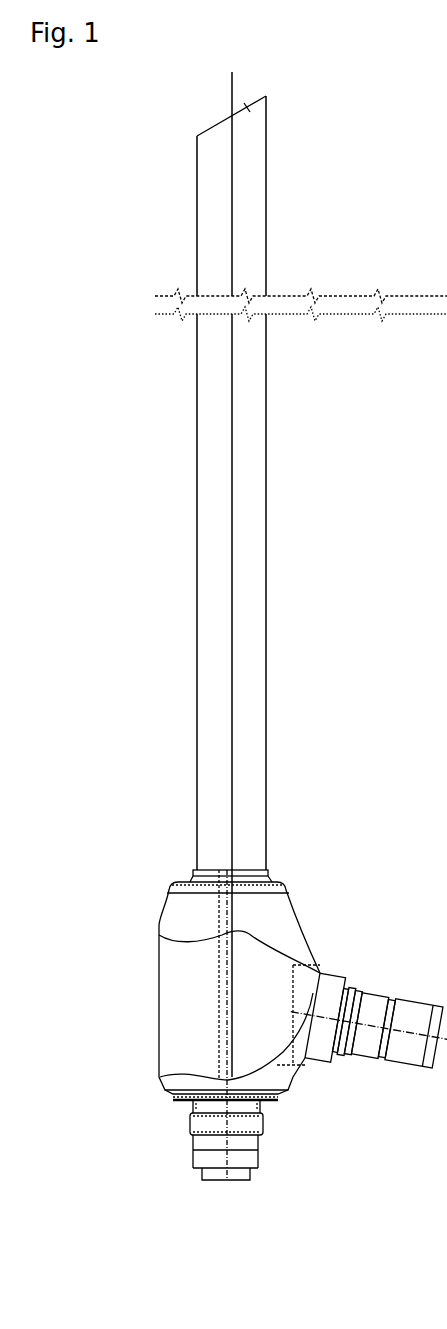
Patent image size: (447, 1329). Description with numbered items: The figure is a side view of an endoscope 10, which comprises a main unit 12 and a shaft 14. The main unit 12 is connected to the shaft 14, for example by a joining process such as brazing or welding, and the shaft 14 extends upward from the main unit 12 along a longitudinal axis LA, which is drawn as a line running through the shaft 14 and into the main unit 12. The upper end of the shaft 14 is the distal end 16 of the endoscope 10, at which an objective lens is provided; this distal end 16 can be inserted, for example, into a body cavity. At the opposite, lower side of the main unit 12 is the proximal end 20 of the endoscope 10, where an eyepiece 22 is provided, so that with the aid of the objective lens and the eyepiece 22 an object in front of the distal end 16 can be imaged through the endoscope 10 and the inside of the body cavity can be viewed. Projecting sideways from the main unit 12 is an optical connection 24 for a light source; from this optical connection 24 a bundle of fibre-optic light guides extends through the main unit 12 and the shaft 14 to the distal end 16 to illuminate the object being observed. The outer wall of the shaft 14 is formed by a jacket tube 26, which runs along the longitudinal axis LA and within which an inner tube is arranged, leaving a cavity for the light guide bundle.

The endoscope 10 is at (197, 579).
The main unit 12 is at (178, 992).
The shaft 14 is at (208, 470).
The distal end 16 is at (210, 130).
The proximal end 20 is at (240, 1178).
The eyepiece 22 is at (207, 1173).
The optical connection 24 is at (418, 1012).
The jacket tube 26 is at (210, 748).
The longitudinal axis LA is at (232, 690).